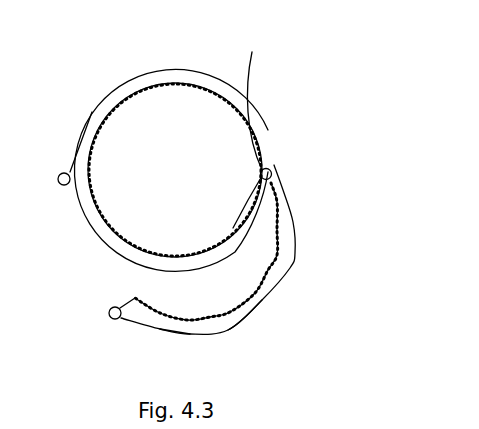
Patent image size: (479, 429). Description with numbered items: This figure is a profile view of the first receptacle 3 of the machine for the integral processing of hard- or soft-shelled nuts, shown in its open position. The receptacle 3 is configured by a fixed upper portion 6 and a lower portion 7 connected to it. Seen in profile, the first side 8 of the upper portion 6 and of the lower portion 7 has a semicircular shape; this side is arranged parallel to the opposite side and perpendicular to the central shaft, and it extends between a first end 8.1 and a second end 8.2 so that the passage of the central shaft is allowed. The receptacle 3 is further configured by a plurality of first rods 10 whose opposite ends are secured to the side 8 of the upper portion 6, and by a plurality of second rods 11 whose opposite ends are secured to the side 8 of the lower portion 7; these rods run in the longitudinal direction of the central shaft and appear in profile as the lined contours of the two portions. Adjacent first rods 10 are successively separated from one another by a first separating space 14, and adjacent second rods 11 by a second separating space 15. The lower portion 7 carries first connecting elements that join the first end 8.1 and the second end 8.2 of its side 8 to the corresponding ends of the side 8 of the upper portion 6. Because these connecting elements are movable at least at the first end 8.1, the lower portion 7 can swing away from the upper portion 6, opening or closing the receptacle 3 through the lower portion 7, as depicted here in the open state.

The first receptacle 3 is at (192, 142).
The upper portion 6 is at (90, 110).
The first separating space 14 is at (188, 82).
The first rods 10 is at (200, 86).
The first side 8 is at (88, 143).
The first end of the first side 8.1 is at (58, 182).
The second end of the first side 8.2 is at (275, 161).
The second separating space 15 is at (295, 253).
The second rods 11 is at (270, 268).
The lower portion 7 is at (238, 331).